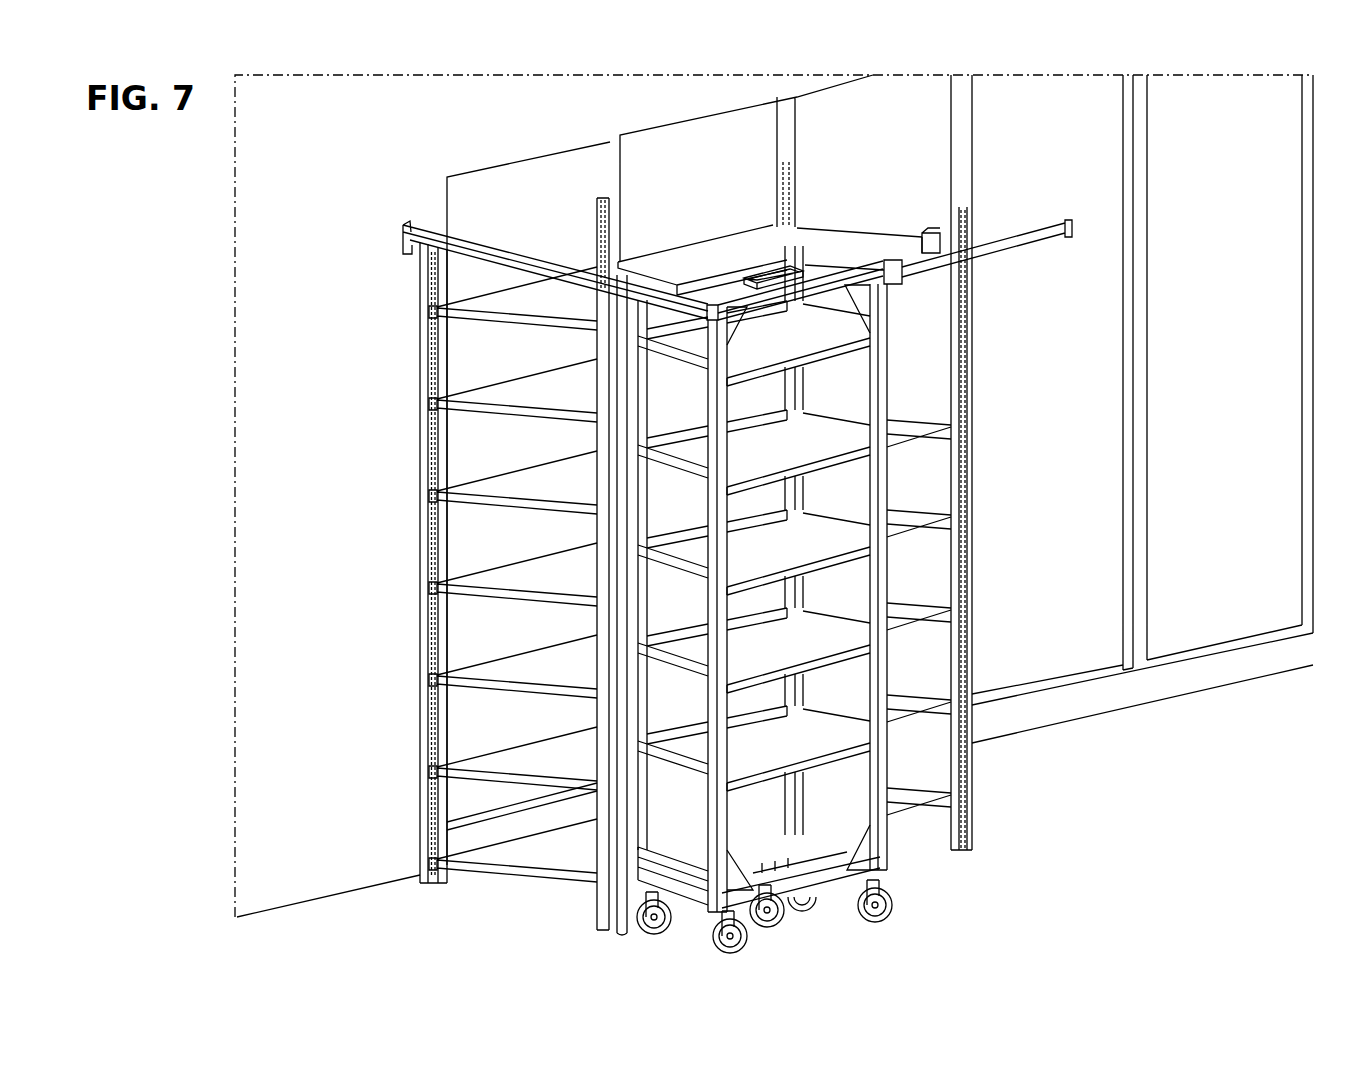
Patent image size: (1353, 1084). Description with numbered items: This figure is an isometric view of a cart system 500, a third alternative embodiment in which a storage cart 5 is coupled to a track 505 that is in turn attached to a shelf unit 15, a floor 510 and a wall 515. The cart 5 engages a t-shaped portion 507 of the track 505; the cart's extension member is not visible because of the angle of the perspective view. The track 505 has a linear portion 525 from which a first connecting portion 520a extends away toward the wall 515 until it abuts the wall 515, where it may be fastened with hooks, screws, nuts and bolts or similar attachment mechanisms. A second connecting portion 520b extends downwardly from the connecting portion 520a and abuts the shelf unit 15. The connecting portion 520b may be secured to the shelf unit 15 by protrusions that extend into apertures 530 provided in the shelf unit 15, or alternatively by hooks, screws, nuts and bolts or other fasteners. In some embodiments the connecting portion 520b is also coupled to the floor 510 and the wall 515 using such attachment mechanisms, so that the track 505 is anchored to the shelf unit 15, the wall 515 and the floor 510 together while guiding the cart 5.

The cart 5 is at (893, 667).
The shelf unit 15 is at (407, 596).
The system 500 is at (860, 264).
The track 505 is at (1047, 218).
The t-shaped portion 507 is at (765, 262).
The floor 510 is at (1142, 441).
The wall 515 is at (586, 470).
The connecting portion 520a is at (474, 255).
The connecting portion 520b is at (620, 935).
The linear portion 525 is at (965, 257).
The apertures 530 is at (972, 642).